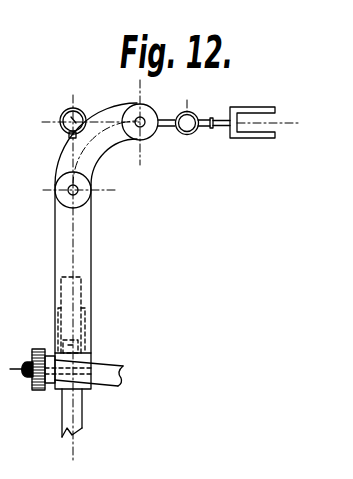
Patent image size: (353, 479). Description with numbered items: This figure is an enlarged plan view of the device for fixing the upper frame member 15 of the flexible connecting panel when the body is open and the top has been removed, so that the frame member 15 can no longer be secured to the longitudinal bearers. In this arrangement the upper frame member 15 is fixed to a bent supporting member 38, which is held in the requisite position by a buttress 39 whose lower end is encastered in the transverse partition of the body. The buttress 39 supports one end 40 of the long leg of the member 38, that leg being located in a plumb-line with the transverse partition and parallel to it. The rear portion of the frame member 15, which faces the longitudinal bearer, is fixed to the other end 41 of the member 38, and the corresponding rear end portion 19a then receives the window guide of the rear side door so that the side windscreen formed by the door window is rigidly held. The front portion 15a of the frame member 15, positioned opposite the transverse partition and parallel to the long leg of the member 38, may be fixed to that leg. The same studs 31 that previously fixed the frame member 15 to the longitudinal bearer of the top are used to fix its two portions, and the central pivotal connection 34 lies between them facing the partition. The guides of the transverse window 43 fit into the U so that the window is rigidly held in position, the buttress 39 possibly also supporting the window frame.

The third pivot axis 34 is at (68, 110).
The bolts 31 is at (147, 118).
The front portion of the frame member 15a is at (69, 136).
The upper frame member 15 is at (165, 128).
The rear end portion of the upper frame member 19a is at (213, 118).
The other end of the member 41 is at (147, 131).
The bent supporting member 38 is at (84, 250).
The buttress 39 is at (104, 367).
The end of the long leg of the member 40 is at (84, 393).
The transverse window 43 is at (72, 413).